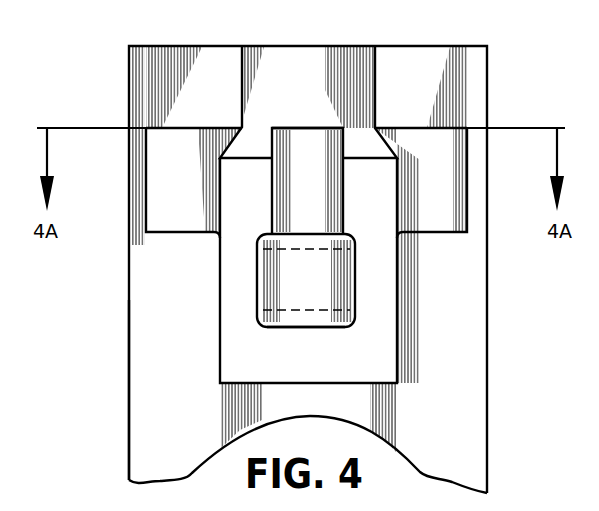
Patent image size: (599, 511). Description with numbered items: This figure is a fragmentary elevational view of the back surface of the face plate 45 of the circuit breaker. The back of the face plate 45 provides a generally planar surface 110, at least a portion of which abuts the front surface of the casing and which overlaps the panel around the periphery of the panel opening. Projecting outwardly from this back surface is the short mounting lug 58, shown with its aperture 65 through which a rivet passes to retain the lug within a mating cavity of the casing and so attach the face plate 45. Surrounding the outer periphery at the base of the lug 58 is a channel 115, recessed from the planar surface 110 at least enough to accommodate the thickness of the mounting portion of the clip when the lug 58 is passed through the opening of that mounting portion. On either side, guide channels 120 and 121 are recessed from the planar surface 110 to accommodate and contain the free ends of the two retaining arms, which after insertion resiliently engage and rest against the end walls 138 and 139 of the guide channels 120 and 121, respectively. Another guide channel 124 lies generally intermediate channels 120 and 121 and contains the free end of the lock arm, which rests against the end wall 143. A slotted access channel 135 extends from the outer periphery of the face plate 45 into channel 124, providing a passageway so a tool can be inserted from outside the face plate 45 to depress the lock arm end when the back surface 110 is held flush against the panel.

The face plate 45 is at (494, 87).
The generally planar surface 110 is at (140, 362).
The channel 115 is at (385, 345).
The guide channel 120 is at (153, 214).
The guide channel 121 is at (462, 202).
The guide channel 124 is at (292, 126).
The slotted access channel 135 is at (310, 107).
The end wall 138 is at (179, 130).
The end wall 139 is at (423, 130).
The end wall 143 is at (285, 132).
The aperture 65 is at (343, 285).
The mounting lug 58 is at (289, 318).